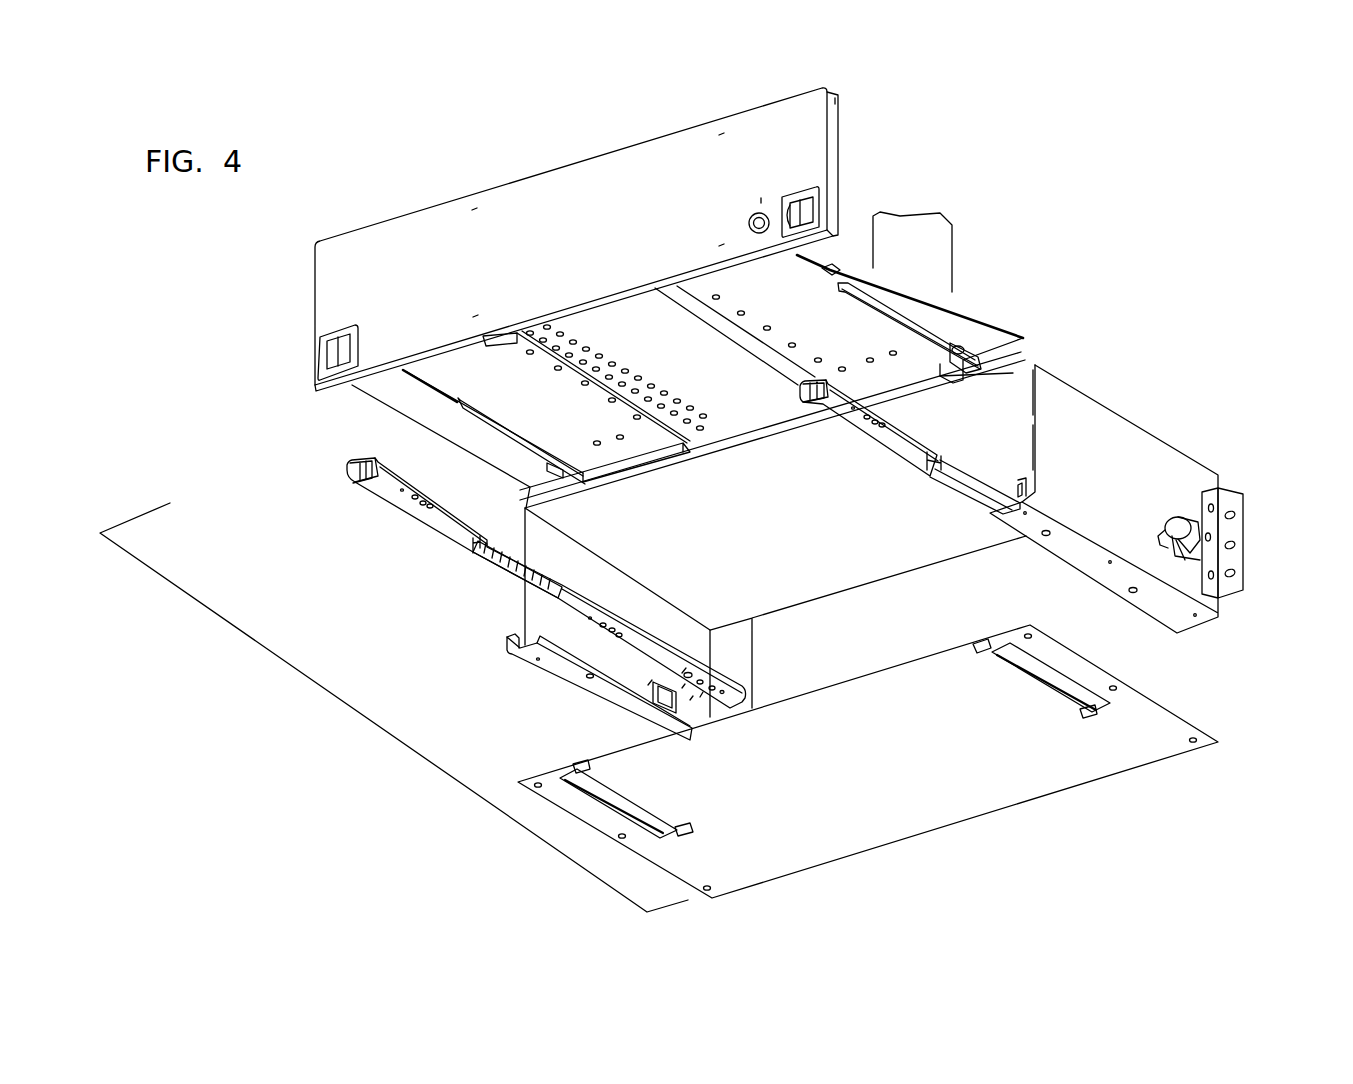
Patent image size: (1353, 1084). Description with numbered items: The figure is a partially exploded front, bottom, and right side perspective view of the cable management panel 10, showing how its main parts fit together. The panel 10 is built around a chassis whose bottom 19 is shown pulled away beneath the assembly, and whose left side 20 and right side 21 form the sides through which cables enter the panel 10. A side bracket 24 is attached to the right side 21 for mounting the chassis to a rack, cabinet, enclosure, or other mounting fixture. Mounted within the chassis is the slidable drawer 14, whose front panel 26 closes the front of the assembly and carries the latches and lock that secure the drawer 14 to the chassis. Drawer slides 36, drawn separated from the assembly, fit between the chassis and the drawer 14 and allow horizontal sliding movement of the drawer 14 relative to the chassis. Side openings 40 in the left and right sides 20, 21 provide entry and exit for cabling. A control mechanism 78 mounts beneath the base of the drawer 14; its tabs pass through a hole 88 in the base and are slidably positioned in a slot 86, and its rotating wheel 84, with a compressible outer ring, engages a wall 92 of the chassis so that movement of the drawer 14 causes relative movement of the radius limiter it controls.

The cable management panel 10 is at (363, 718).
The slidable drawer 14 is at (838, 122).
The bottom 19 is at (868, 784).
The left side 20 is at (630, 603).
The right side 21 is at (1108, 479).
The side bracket 24 is at (1244, 527).
The front panel 26 is at (548, 212).
The drawer slide 36 is at (457, 540).
The side opening 40 is at (652, 693).
The control mechanism 78 is at (916, 312).
The rotating wheel 84 is at (958, 345).
The slot 86 is at (857, 305).
The hole 88 is at (836, 266).
The wall 92 is at (1054, 674).